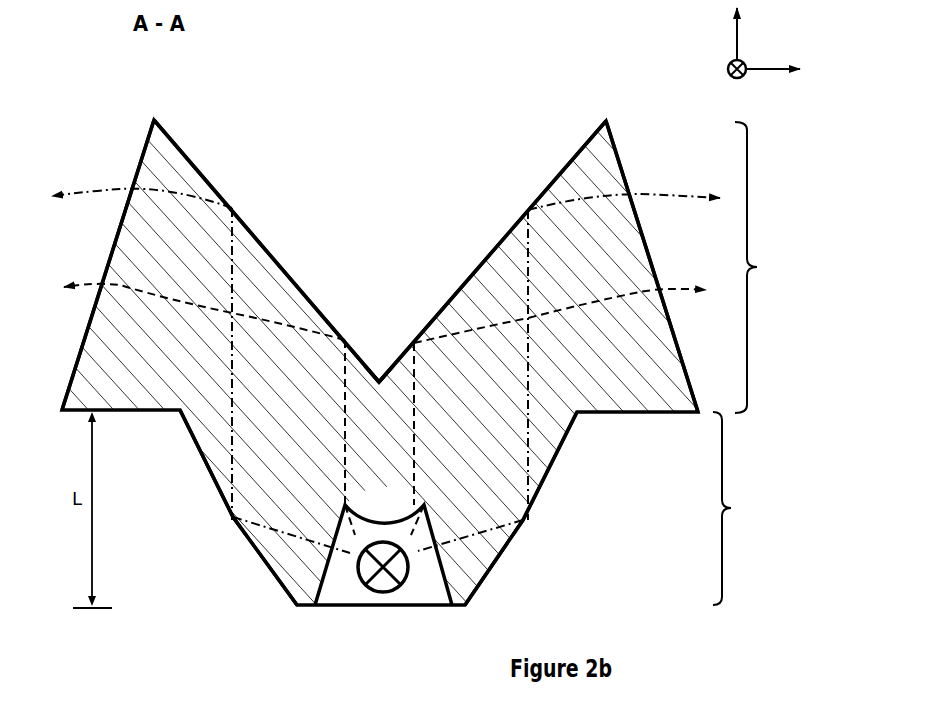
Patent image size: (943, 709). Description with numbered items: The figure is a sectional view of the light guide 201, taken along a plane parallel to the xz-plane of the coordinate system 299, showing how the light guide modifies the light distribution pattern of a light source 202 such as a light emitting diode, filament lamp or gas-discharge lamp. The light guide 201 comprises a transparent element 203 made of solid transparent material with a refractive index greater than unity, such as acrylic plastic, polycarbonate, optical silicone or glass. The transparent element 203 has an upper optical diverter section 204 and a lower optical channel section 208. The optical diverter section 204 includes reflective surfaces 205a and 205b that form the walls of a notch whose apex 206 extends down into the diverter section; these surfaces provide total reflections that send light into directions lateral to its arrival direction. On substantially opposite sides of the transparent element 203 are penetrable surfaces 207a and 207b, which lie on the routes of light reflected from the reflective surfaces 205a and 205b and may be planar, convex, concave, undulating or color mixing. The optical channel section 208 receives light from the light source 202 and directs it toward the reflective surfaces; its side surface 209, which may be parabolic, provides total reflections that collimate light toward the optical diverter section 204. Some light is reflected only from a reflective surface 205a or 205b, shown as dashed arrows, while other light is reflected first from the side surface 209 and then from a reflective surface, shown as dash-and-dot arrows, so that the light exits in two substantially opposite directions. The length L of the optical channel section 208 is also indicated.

The light guide 201 is at (391, 212).
The light source 202 is at (383, 592).
The transparent element 203 is at (284, 373).
The optical diverter section 204 is at (424, 337).
The reflective surface 205a is at (208, 173).
The reflective surface 205b is at (566, 165).
The apex 206 is at (379, 380).
The penetrable surface 207a is at (139, 170).
The penetrable surface 207b is at (632, 181).
The optical channel section 208 is at (740, 508).
The side surface 209 is at (199, 461).
The coordinate system 299 is at (796, 40).